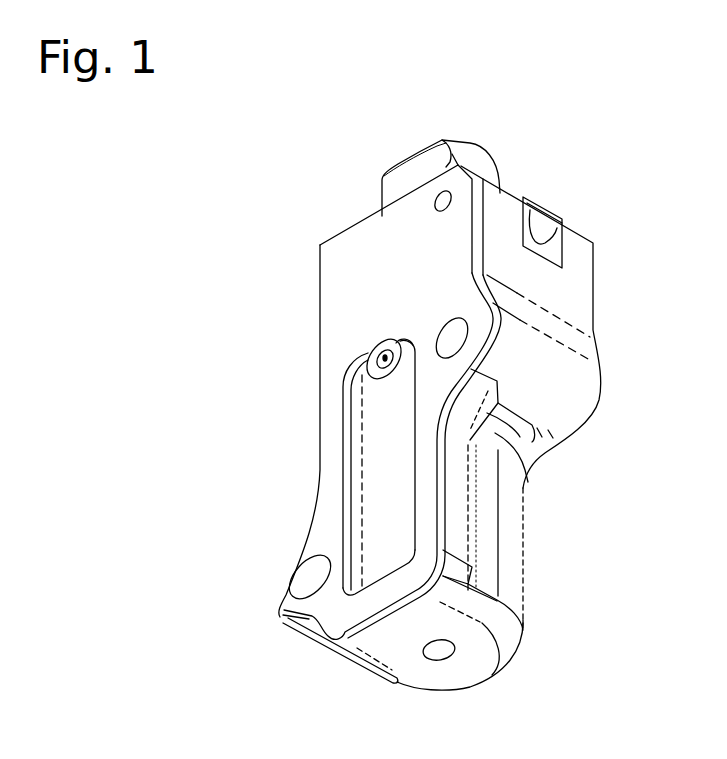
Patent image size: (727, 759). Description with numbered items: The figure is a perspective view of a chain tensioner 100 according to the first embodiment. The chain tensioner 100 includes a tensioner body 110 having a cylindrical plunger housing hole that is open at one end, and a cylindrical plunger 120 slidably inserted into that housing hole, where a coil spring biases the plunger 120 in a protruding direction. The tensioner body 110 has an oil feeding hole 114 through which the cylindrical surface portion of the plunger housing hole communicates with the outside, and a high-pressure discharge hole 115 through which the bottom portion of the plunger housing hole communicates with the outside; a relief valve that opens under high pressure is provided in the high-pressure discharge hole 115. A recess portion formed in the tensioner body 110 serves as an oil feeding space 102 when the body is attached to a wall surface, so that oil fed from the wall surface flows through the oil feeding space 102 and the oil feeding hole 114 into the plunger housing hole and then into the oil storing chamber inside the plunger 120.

The chain tensioner 100 is at (239, 198).
The tensioner body 110 is at (320, 324).
The plunger 120 is at (487, 165).
The oil feeding space 102 is at (376, 483).
The oil feeding hole 114 is at (370, 353).
The high-pressure discharge hole 115 is at (441, 652).